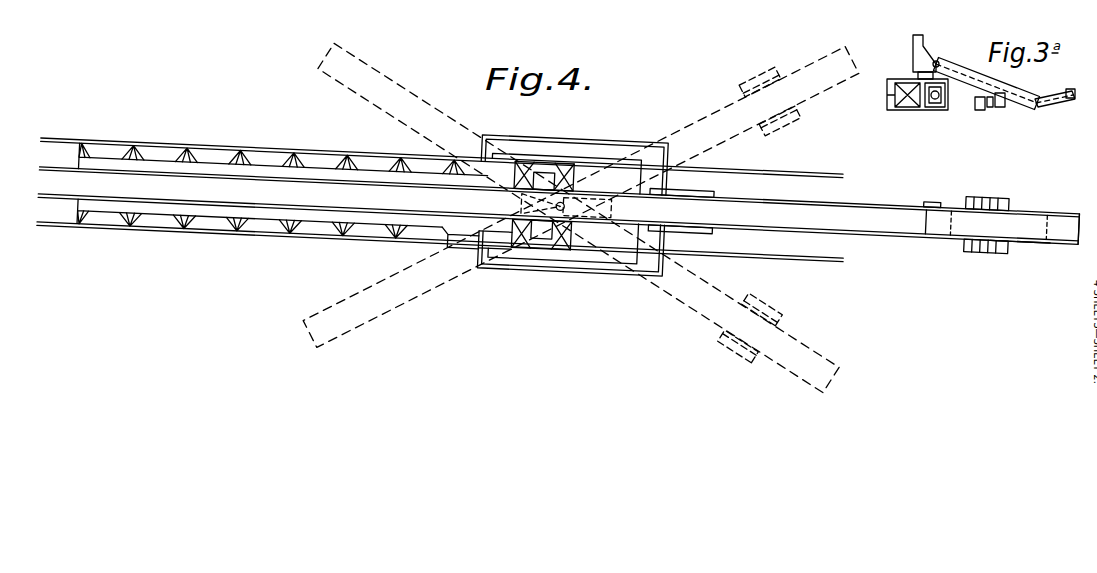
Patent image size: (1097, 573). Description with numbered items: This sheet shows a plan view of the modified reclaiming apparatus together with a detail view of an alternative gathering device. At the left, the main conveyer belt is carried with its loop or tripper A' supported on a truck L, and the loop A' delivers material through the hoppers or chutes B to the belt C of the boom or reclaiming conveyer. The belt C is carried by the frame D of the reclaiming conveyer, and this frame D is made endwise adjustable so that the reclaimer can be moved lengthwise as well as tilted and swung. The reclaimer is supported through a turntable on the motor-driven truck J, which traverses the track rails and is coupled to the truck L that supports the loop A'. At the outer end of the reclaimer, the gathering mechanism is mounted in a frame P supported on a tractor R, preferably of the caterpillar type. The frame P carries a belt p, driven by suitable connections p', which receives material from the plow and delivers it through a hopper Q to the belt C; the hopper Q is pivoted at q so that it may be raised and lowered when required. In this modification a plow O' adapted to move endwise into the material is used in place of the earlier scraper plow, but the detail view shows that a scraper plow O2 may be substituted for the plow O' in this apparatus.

In FIG. 4, the truck L is at (228, 147).
In FIG. 4, the loop or tripper A' is at (441, 238).
In FIG. 4, the belt C is at (851, 219).
In FIG. 4, the truck J is at (587, 144).
In FIG. 4, the hoppers or chutes B is at (597, 206).
In FIG. 4, the frame of the boom or reclaiming conveyer D is at (680, 299).
In FIG. 4, the tractor R is at (742, 84).
In FIG. 4, the frame P is at (958, 243).
In FIG. 3a, the frame P is at (1032, 95).
In FIG. 4, the belt p is at (1020, 262).
In FIG. 3a, the belt p is at (999, 117).
In FIG. 4, the connections for driving the belt p' is at (924, 192).
In FIG. 3a, the connections for driving the belt p' is at (900, 107).
In FIG. 4, the plow O' is at (1062, 219).
In FIG. 3a, the hopper Q is at (913, 50).
In FIG. 3a, the pivot q is at (940, 62).
In FIG. 3a, the scraper plow O2 is at (1055, 102).